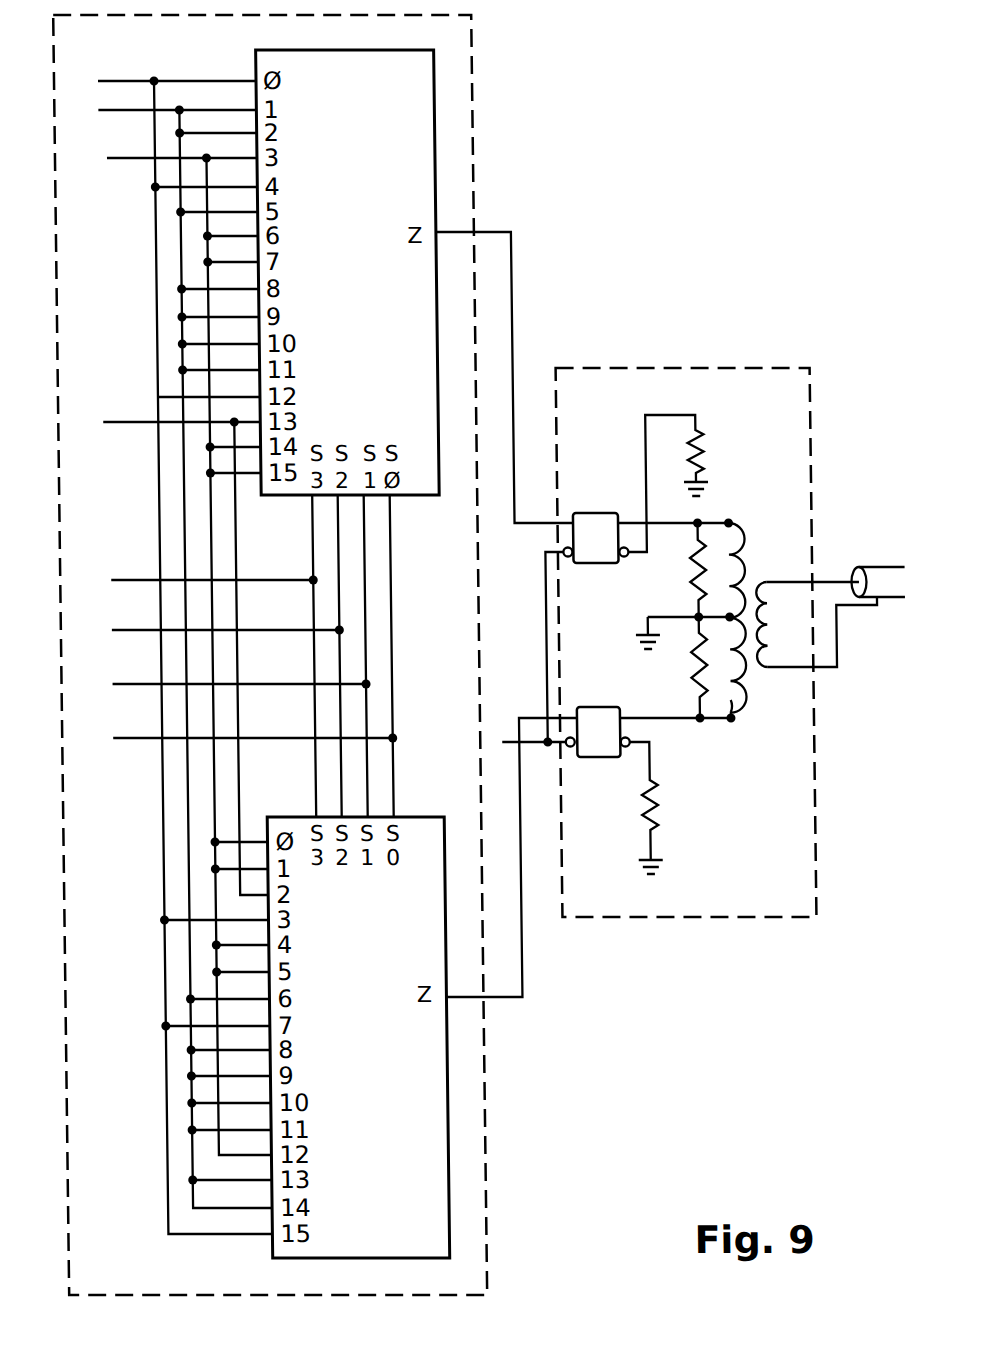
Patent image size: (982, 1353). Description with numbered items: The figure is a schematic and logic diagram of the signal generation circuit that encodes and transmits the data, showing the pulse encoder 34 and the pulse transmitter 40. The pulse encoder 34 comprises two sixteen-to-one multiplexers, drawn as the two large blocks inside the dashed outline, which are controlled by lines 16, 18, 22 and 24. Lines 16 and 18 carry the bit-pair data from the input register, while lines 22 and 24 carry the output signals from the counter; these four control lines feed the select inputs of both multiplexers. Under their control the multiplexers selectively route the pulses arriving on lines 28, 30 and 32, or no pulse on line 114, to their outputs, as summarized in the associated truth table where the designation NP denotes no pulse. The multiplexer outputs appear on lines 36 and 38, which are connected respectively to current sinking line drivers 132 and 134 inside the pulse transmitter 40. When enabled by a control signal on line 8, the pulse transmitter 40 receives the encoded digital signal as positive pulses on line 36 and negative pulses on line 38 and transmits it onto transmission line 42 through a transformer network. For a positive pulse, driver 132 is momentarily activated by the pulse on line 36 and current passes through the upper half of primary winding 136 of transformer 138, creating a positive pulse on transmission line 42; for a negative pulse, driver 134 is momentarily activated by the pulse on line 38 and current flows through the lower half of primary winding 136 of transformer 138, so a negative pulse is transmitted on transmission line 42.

The pulse line 30 is at (119, 81).
The no-pulse line 114 is at (121, 110).
The pulse line 28 is at (131, 158).
The pulse line 32 is at (132, 423).
The counter output line 22 is at (123, 580).
The counter output line 24 is at (122, 630).
The bit-pair data line 16 is at (121, 684).
The bit-pair data line 18 is at (121, 738).
The pulse encoder 34 is at (484, 135).
The multiplexer output line 36 is at (505, 332).
The multiplexer output line 38 is at (510, 937).
The pulse transmitter 40 is at (711, 355).
The current sinking line driver 132 is at (589, 512).
The current sinking line driver 134 is at (587, 758).
The primary winding 136 is at (741, 702).
The transformer 138 is at (754, 567).
The transmission line 42 is at (878, 600).
The control signal line 8 is at (493, 742).